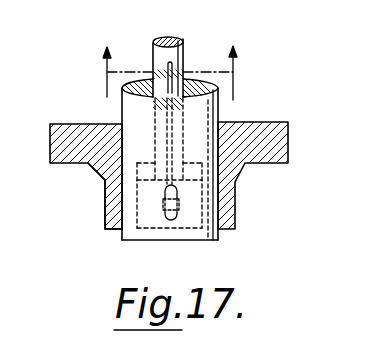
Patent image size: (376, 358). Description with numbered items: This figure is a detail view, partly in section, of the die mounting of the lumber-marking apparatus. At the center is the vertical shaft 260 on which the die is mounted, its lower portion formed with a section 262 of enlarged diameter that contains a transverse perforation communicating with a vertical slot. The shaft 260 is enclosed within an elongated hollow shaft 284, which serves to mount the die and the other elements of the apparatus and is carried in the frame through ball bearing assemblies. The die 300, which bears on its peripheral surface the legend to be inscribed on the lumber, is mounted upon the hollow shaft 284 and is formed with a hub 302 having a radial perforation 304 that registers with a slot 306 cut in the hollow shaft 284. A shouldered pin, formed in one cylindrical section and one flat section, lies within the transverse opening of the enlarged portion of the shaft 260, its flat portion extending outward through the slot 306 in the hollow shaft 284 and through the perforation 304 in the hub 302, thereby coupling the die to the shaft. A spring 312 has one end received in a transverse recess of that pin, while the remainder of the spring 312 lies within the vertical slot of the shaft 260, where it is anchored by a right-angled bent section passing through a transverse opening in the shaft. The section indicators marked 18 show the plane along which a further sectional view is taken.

The section line 18- 18 is at (171, 73).
The vertical shaft 260 is at (182, 50).
The section of enlarged diameter 262 is at (188, 229).
The hollow shaft 284 is at (218, 239).
The die 300 is at (62, 125).
The hub 302 is at (107, 198).
The radial perforation 304 is at (165, 204).
The slot 306 is at (176, 192).
The spring 312 is at (167, 74).